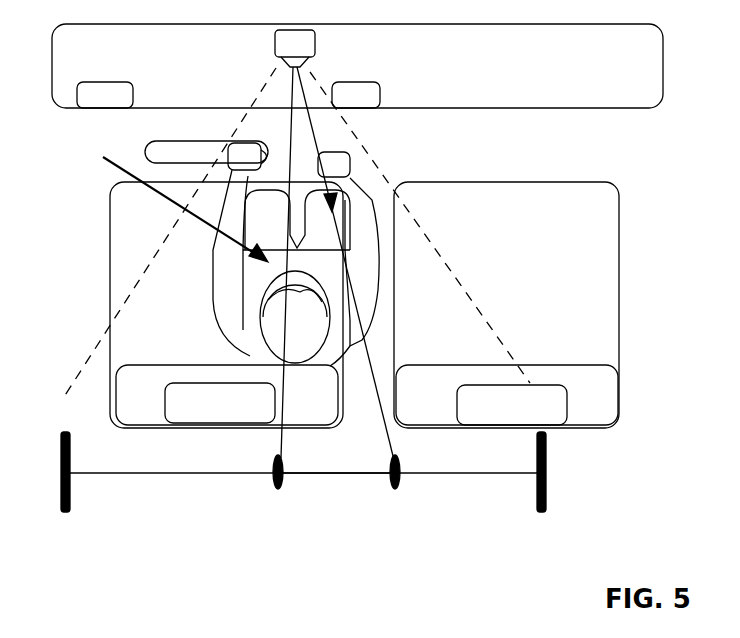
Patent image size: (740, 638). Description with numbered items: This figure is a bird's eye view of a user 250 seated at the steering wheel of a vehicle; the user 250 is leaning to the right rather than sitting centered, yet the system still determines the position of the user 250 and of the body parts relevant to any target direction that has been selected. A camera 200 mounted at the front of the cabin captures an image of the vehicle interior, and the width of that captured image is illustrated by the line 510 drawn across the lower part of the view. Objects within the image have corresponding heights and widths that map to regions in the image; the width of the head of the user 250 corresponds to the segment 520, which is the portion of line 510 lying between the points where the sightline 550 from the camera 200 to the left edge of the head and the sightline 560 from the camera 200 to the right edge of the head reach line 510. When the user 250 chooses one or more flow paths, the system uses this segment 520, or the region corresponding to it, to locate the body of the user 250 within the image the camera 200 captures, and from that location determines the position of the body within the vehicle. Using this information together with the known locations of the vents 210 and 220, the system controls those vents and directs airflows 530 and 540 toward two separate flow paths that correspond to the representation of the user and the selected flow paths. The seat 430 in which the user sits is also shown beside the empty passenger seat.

The camera 200 is at (636, 55).
The vent 210 is at (104, 82).
The vent 220 is at (358, 82).
The user 250 is at (272, 330).
The driver seat 430 is at (110, 280).
The line 510 is at (540, 533).
The segment 520 is at (307, 472).
The airflow 530 is at (117, 168).
The airflow 540 is at (338, 122).
The sightline 550 is at (273, 440).
The sightline 560 is at (385, 437).